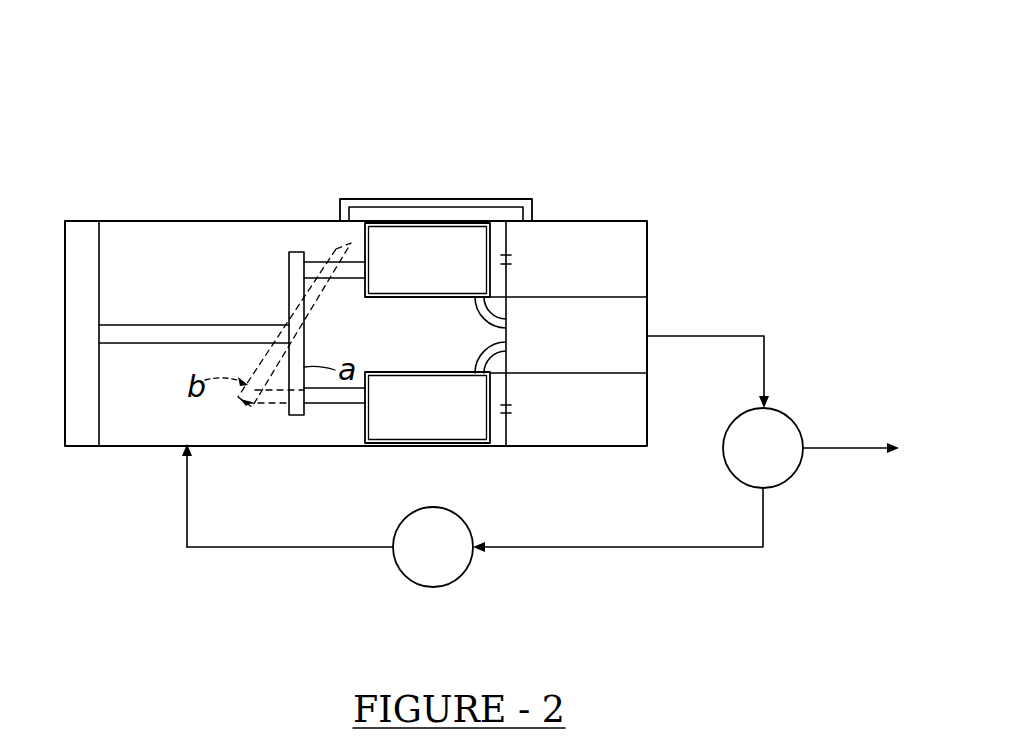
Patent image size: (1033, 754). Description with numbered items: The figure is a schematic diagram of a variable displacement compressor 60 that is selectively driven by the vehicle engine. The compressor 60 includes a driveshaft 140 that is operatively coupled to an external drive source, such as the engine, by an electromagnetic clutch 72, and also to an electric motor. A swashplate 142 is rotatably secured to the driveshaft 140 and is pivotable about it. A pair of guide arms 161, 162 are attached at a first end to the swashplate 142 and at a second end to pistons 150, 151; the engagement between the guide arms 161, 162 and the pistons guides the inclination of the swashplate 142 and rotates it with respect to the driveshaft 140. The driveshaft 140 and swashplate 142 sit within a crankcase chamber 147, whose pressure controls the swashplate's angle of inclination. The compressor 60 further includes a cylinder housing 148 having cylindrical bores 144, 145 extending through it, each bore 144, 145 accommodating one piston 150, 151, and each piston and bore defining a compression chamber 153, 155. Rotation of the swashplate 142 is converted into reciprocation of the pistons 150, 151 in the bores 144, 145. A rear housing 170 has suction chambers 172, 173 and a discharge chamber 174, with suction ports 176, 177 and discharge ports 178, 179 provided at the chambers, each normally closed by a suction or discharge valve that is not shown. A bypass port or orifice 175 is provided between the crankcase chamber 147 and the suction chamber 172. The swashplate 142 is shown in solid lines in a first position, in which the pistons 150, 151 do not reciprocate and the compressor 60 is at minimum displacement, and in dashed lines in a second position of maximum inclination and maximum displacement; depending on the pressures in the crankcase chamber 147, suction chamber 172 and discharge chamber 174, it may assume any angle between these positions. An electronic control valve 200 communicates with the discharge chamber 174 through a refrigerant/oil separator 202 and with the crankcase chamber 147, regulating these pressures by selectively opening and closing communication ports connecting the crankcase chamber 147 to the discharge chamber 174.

The variable displacement compressor 60 is at (715, 58).
The electromagnetic clutch 72 is at (86, 236).
The driveshaft 140 is at (158, 333).
The swashplate 142 is at (289, 252).
The cylindrical bore 144 is at (408, 222).
The cylindrical bore 145 is at (407, 448).
The crankcase chamber 147 is at (223, 303).
The cylinder housing 148 is at (384, 221).
The piston 150 is at (445, 233).
The piston 151 is at (453, 432).
The compression chamber 153 is at (502, 233).
The compression chamber 155 is at (497, 437).
The guide arm 161 is at (356, 268).
The guide arm 162 is at (345, 400).
The rear housing 170 is at (622, 218).
The suction chamber 172 is at (623, 289).
The suction chamber 173 is at (628, 434).
The discharge chamber 174 is at (578, 364).
The bypass port or orifice 175 is at (526, 208).
The suction port 176 is at (513, 260).
The suction port 177 is at (513, 409).
The discharge port 178 is at (476, 316).
The discharge port 179 is at (475, 358).
The electronic control valve 200 is at (462, 577).
The refrigerant/oil separator 202 is at (790, 478).